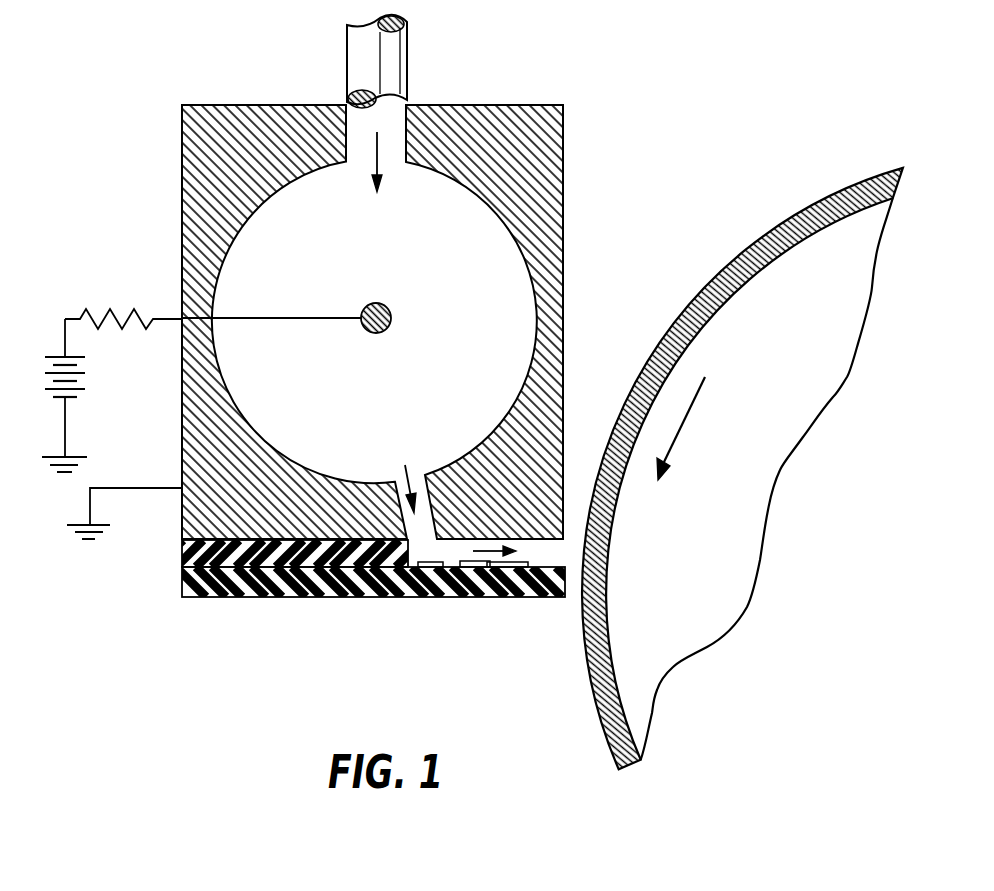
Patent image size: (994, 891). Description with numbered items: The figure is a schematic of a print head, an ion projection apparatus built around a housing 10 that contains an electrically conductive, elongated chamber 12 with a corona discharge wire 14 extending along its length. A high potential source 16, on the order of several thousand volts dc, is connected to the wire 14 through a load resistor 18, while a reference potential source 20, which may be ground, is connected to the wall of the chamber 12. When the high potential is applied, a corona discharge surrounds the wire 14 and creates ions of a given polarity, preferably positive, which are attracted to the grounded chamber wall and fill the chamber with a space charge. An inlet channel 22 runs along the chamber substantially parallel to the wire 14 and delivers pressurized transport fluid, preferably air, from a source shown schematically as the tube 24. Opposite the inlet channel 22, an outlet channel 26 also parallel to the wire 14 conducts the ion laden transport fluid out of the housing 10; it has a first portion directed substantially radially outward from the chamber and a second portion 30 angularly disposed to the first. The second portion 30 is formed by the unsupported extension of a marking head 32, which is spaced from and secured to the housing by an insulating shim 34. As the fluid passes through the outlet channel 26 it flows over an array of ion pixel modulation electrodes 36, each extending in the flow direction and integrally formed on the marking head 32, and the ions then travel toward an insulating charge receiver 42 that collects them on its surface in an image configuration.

The housing 10 is at (568, 93).
The chamber 12 is at (498, 210).
The corona discharge wire 14 is at (390, 328).
The high potential source 16 is at (85, 373).
The load resistor 18 is at (118, 311).
The reference potential source 20 is at (133, 488).
The inlet channel 22 is at (406, 140).
The tube 24 is at (408, 60).
The outlet channel 26 is at (420, 545).
The second portion 30 is at (545, 553).
The marking head 32 is at (183, 585).
The insulating shim 34 is at (183, 558).
The modulation electrodes 36 is at (489, 568).
The insulating charge receiver 42 is at (700, 295).